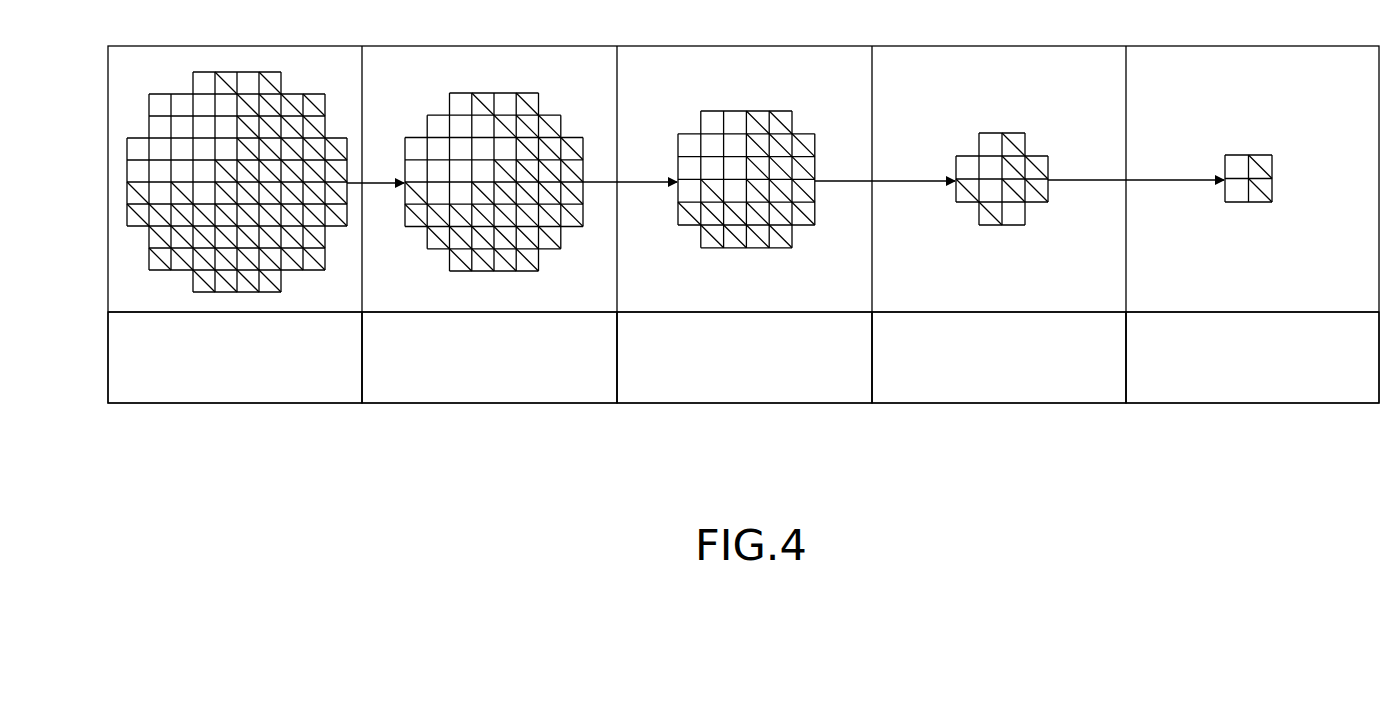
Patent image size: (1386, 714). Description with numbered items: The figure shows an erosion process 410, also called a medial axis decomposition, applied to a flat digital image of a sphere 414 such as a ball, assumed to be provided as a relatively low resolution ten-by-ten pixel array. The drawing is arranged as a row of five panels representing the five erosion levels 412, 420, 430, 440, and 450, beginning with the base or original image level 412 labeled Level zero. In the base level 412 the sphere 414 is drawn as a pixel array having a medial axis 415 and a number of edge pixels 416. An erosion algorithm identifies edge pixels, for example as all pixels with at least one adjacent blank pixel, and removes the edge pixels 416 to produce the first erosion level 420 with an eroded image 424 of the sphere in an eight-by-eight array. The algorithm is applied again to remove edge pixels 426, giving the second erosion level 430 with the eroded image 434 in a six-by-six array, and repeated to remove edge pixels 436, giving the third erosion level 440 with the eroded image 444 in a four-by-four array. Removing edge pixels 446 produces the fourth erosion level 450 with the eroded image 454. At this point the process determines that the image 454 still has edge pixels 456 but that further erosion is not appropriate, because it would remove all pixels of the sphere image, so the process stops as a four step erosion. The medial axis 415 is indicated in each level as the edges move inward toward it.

The erosion process 410 is at (176, 474).
The base level 412 is at (243, 403).
The first erosion level 420 is at (499, 403).
The second erosion level 430 is at (762, 403).
The third erosion level 440 is at (992, 403).
The fourth erosion level 450 is at (1237, 403).
The sphere 414 is at (143, 116).
The eroded image 424 is at (414, 116).
The eroded image 434 is at (682, 130).
The eroded image 444 is at (964, 150).
The eroded image 454 is at (1224, 150).
The medial axis 415 is at (237, 183).
The edge pixels 416 is at (131, 228).
The edge pixels 426 is at (415, 226).
The edge pixels 436 is at (700, 226).
The edge pixels 446 is at (980, 208).
The edge pixels 456 is at (1272, 157).